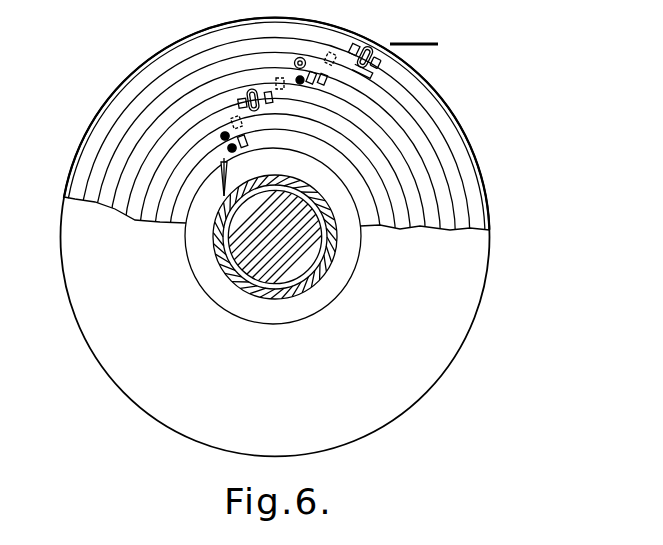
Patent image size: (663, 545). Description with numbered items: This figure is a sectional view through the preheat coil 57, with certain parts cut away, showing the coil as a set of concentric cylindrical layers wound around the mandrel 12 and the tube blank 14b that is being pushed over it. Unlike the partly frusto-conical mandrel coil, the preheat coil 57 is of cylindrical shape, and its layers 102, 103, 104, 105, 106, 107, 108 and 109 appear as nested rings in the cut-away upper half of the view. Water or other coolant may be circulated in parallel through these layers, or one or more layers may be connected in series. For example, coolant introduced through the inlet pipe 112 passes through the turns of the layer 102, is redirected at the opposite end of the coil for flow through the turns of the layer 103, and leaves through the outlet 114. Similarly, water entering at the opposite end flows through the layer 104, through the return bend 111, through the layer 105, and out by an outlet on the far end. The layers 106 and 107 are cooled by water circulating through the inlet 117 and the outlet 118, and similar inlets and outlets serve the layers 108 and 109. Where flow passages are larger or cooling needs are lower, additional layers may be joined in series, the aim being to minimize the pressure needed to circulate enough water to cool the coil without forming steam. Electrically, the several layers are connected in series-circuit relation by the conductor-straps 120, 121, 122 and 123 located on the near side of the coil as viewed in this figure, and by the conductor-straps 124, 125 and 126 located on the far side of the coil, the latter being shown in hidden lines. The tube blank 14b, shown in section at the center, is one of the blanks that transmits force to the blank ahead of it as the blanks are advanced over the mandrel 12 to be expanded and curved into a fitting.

The mandrel 12 is at (312, 246).
The tube blank 14b is at (272, 296).
The preheat coil 57 is at (566, 248).
The layer 102 is at (308, 140).
The layer 103 is at (342, 147).
The layer 104 is at (353, 216).
The layer 105 is at (372, 212).
The layer 106 is at (382, 122).
The layer 107 is at (384, 102).
The layer 108 is at (390, 85).
The layer 109 is at (318, 33).
The return bend 111 is at (242, 100).
The inlet pipe 112 is at (237, 150).
The outlet 114 is at (220, 168).
The inlet 117 is at (312, 83).
The outlet 118 is at (294, 64).
The conductor-strap 120 is at (246, 142).
The conductor-strap 121 is at (273, 100).
The conductor-strap 122 is at (324, 82).
The conductor-strap 123 is at (374, 48).
The conductor-strap 124 is at (242, 122).
The conductor-strap 125 is at (276, 83).
The conductor-strap 126 is at (326, 57).